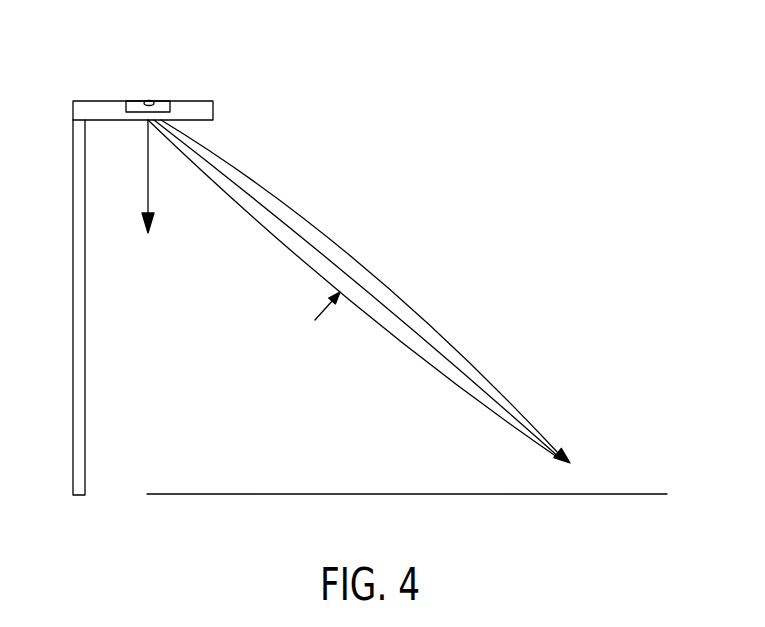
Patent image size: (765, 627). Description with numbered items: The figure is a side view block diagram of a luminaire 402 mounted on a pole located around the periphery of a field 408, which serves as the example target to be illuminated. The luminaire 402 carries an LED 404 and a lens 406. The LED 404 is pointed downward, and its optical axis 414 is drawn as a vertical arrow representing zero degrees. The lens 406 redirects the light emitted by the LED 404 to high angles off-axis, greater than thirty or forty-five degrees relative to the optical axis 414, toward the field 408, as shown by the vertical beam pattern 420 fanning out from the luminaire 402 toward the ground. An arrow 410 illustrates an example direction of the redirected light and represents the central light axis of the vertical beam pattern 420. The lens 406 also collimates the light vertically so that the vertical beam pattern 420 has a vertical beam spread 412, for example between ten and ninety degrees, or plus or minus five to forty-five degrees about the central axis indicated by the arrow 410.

The luminaire 402 is at (197, 101).
The LED 404 is at (147, 101).
The lens 406 is at (158, 101).
The field 408 is at (640, 494).
The arrow 410 is at (548, 426).
The vertical beam spread 412 is at (368, 254).
The optical axis 414 is at (148, 192).
The vertical beam pattern 420 is at (477, 366).